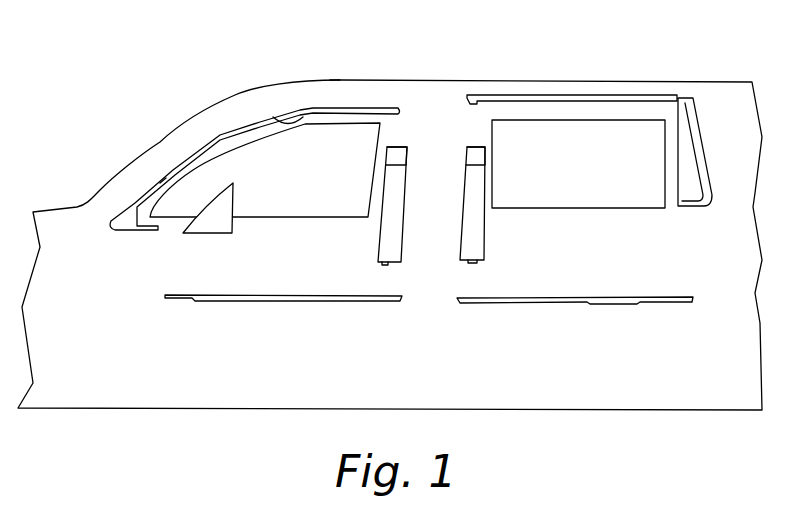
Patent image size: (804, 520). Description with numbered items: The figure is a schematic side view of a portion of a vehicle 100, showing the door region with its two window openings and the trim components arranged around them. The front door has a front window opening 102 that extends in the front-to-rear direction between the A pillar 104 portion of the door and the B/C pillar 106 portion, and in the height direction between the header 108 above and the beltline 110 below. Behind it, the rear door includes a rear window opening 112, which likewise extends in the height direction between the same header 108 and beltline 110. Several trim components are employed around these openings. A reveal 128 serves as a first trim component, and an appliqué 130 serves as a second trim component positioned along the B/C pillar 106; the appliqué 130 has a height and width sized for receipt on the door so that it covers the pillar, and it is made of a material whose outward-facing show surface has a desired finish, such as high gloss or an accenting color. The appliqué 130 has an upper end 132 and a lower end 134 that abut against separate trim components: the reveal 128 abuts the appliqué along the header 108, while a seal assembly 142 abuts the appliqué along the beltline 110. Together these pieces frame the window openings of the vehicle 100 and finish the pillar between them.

The vehicle 100 is at (97, 192).
The front window opening 102 is at (298, 178).
The A pillar 104 is at (172, 157).
The B/C pillar 106 is at (397, 137).
The header 108 is at (342, 98).
The beltline 110 is at (320, 225).
The rear window opening 112 is at (595, 163).
The reveal 128 is at (278, 121).
The appliqué 130 is at (475, 210).
The upper end 132 is at (472, 155).
The lower end 134 is at (477, 260).
The seal assembly 142 is at (312, 303).